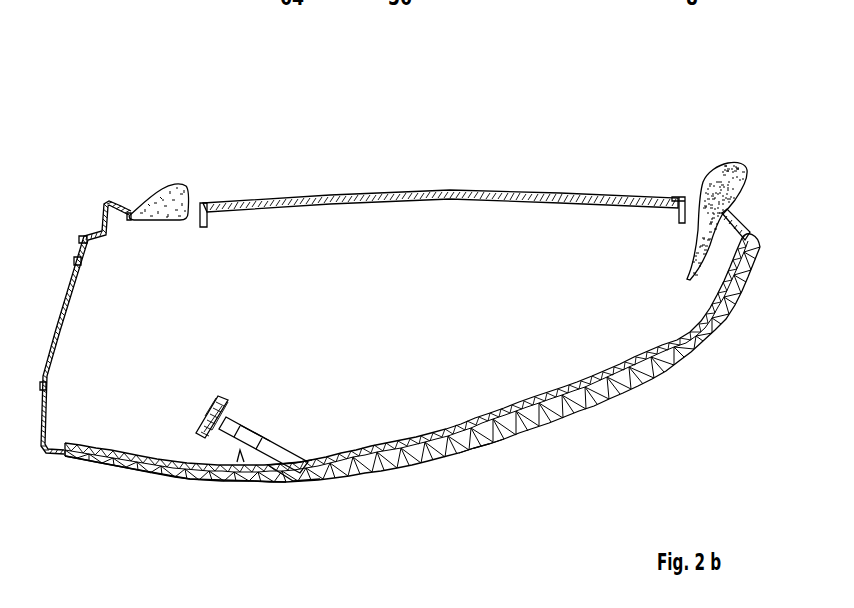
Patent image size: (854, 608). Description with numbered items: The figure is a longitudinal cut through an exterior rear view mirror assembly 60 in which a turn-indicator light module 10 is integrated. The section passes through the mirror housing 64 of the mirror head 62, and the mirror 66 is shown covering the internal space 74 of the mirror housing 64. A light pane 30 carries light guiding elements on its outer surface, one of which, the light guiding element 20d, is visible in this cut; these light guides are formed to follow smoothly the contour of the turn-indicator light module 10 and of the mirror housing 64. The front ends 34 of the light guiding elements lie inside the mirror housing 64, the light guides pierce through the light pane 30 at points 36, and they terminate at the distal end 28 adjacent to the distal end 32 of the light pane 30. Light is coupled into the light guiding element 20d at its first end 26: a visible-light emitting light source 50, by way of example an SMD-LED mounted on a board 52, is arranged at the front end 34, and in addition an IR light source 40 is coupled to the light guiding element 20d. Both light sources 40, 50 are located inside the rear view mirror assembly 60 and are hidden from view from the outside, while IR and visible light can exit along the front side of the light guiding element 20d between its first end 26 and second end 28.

The turn-indicator light module 10 is at (436, 400).
The light guiding element 20d is at (487, 440).
The end of the light guiding elements 26 is at (248, 424).
The distal end 28 is at (760, 247).
The light pane 30 is at (637, 367).
The distal end of the light pane 32 is at (742, 220).
The front ends of the light guiding elements 34 is at (275, 458).
The points 36 is at (295, 481).
The IR light source 40 is at (263, 403).
The visible-light emitting light source 50 is at (240, 418).
The board 52 is at (217, 397).
The exterior rear view mirror assembly 60 is at (174, 151).
The mirror head 62 is at (98, 466).
The mirror housing 64 is at (47, 457).
The mirror 66 is at (430, 197).
The internal space 74 is at (377, 323).